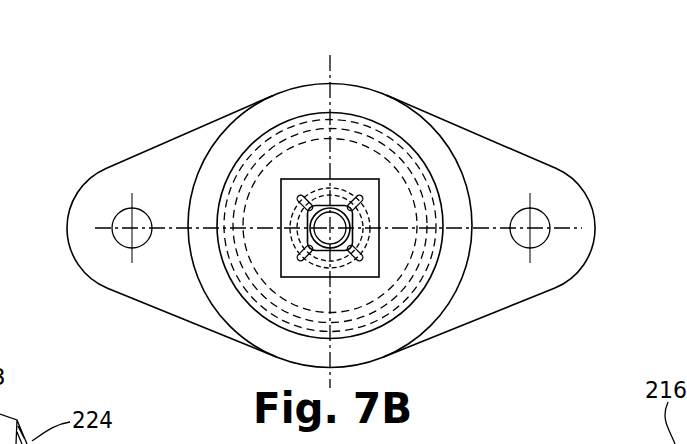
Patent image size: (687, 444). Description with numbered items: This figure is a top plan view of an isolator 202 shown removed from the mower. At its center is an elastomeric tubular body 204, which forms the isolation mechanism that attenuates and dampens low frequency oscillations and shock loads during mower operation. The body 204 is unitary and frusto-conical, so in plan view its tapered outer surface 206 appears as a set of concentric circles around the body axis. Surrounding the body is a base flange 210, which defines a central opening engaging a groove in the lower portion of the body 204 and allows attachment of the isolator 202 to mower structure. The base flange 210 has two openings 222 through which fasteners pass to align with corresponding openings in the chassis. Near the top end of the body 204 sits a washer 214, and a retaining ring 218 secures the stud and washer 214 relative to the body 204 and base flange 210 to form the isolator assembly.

The isolator 202 is at (382, 93).
The elastomeric tubular body 204 is at (438, 290).
The tapered outer surface 206 is at (200, 188).
The base flange 210 is at (560, 170).
The washer 214 is at (218, 254).
The retaining ring 218 is at (296, 235).
The openings 222 is at (118, 214).